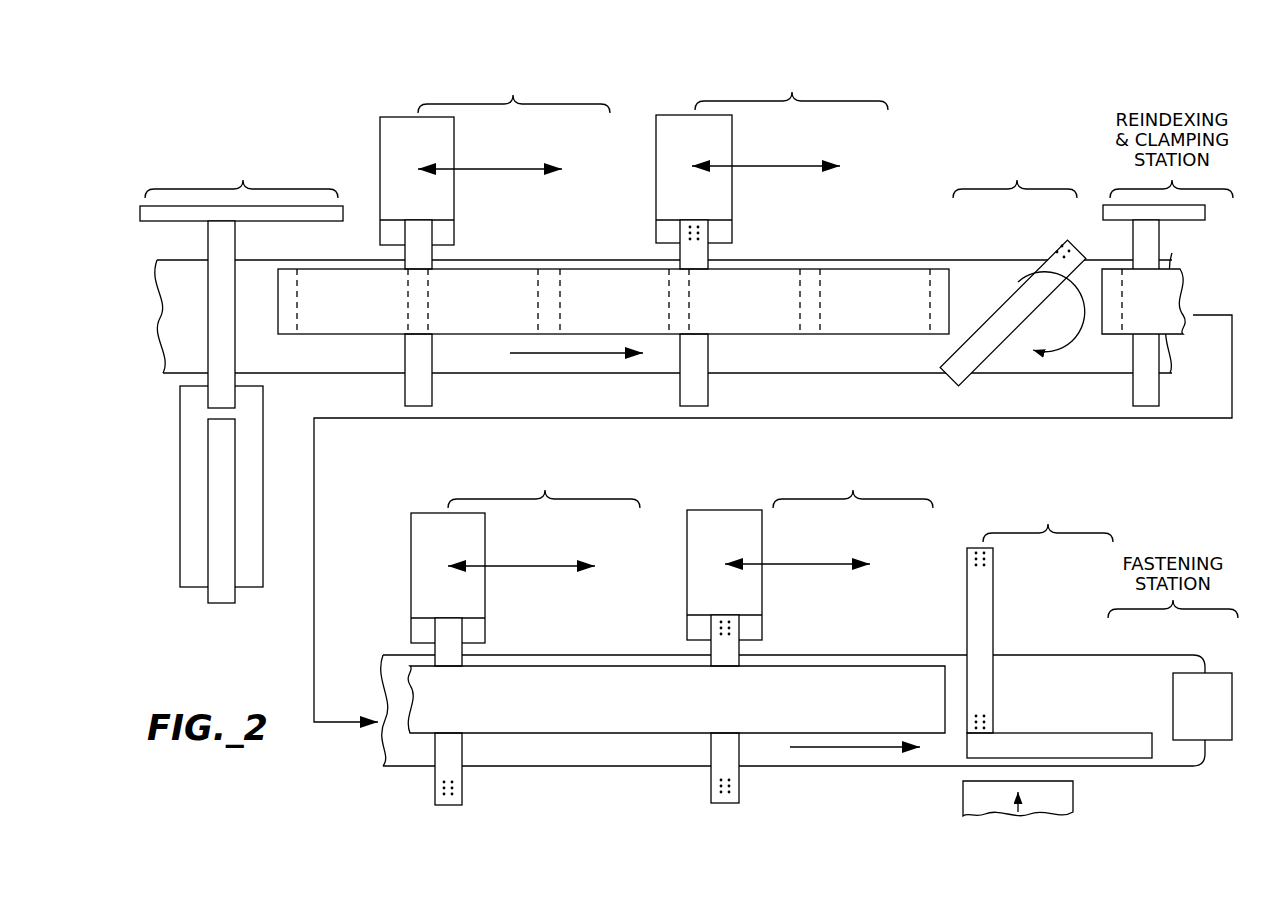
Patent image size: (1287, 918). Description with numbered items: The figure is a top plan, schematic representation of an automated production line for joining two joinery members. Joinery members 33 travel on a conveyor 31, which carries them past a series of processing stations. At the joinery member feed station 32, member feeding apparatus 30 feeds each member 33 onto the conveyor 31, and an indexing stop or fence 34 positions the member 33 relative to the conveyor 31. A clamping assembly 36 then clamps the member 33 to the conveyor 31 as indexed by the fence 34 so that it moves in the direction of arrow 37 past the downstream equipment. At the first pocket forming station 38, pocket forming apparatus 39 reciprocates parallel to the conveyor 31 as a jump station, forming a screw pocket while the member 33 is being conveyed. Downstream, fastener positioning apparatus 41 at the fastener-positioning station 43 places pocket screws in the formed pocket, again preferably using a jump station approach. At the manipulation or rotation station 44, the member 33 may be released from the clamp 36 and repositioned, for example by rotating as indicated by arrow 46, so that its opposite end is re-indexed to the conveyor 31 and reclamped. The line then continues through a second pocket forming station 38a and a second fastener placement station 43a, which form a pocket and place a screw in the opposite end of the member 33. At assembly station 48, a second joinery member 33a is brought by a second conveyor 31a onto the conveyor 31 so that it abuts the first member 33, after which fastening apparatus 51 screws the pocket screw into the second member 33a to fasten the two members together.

The member feeding apparatus 30 is at (186, 501).
The conveyor 31 is at (172, 380).
The second conveyor 31a is at (1073, 800).
The joinery member feed station 32 is at (229, 184).
The joinery member 33 is at (218, 305).
The second joinery member 33a is at (1055, 740).
The indexing stop or fence 34 is at (173, 223).
The clamping assembly 36 is at (338, 338).
The direction of conveyor movement 37 is at (548, 355).
The first pocket forming station 38 is at (495, 134).
The second pocket forming station 38a is at (525, 533).
The pocket forming apparatus 39 is at (454, 122).
The fastener positioning apparatus 41 is at (732, 120).
The fastener-positioning station 43 is at (776, 131).
The second fastener placement station 43a is at (823, 530).
The manipulation or rotation station 44 is at (1034, 233).
The rotation arrow 46 is at (1078, 330).
The assembly station 48 is at (1059, 606).
The fastening apparatus 51 is at (1215, 680).